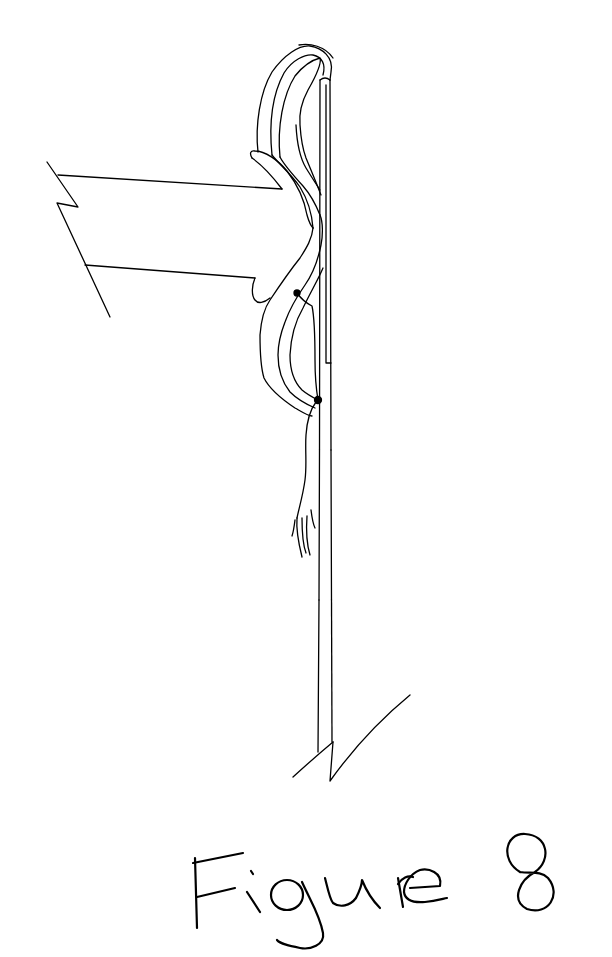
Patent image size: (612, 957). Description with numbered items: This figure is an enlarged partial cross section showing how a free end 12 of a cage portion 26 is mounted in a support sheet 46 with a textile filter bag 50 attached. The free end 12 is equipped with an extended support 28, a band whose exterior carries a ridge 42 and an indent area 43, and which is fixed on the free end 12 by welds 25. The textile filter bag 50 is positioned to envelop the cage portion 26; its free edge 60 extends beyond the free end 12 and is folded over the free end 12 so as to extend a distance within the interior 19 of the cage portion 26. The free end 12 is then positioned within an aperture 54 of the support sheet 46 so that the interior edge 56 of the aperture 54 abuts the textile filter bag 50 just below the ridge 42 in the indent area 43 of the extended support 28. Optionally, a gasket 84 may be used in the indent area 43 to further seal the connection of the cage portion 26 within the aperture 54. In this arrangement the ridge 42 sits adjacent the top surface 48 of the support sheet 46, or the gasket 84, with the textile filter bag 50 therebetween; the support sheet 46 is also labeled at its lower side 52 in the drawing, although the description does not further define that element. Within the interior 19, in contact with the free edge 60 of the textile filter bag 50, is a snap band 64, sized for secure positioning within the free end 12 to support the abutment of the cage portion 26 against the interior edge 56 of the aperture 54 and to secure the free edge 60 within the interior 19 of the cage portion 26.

The free end 12 is at (334, 437).
The interior 19 is at (333, 510).
The cage portion 26 is at (318, 655).
The welds 25 is at (300, 293).
The extended support 28 is at (292, 370).
The ridge 42 is at (266, 118).
The indent area 43 is at (323, 235).
The support sheet 46 is at (88, 176).
The top surface 48 is at (188, 180).
The textile filter bag 50 is at (303, 479).
The flap lower surface 52 is at (136, 268).
The aperture 54 is at (334, 233).
The interior edge 56 is at (272, 263).
The free edge 60 is at (330, 174).
The snap band 64 is at (333, 128).
The gasket 84 is at (260, 316).